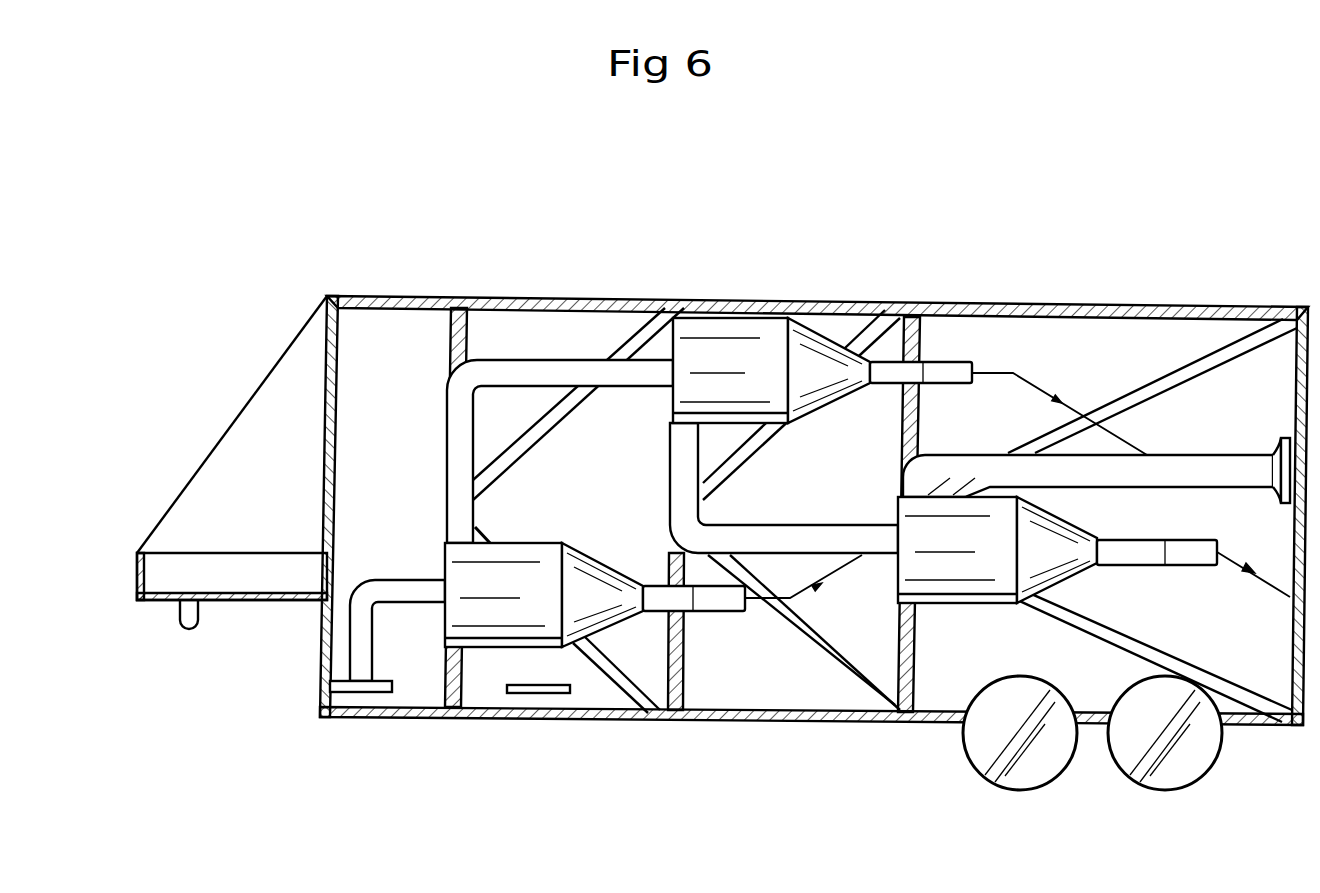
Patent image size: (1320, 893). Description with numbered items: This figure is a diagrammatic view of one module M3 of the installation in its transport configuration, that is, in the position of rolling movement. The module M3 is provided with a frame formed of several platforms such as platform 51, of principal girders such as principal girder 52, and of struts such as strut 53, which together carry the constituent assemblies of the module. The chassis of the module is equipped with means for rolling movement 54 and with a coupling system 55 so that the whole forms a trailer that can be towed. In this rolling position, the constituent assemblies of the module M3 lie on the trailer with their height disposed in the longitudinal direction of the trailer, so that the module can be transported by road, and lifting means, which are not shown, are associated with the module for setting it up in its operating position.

The platform 51 is at (438, 690).
The principal girder 52 is at (402, 298).
The strut 53 is at (634, 688).
The means for rolling movement 54 is at (977, 747).
The coupling system 55 is at (163, 583).
The module M3 is at (855, 440).